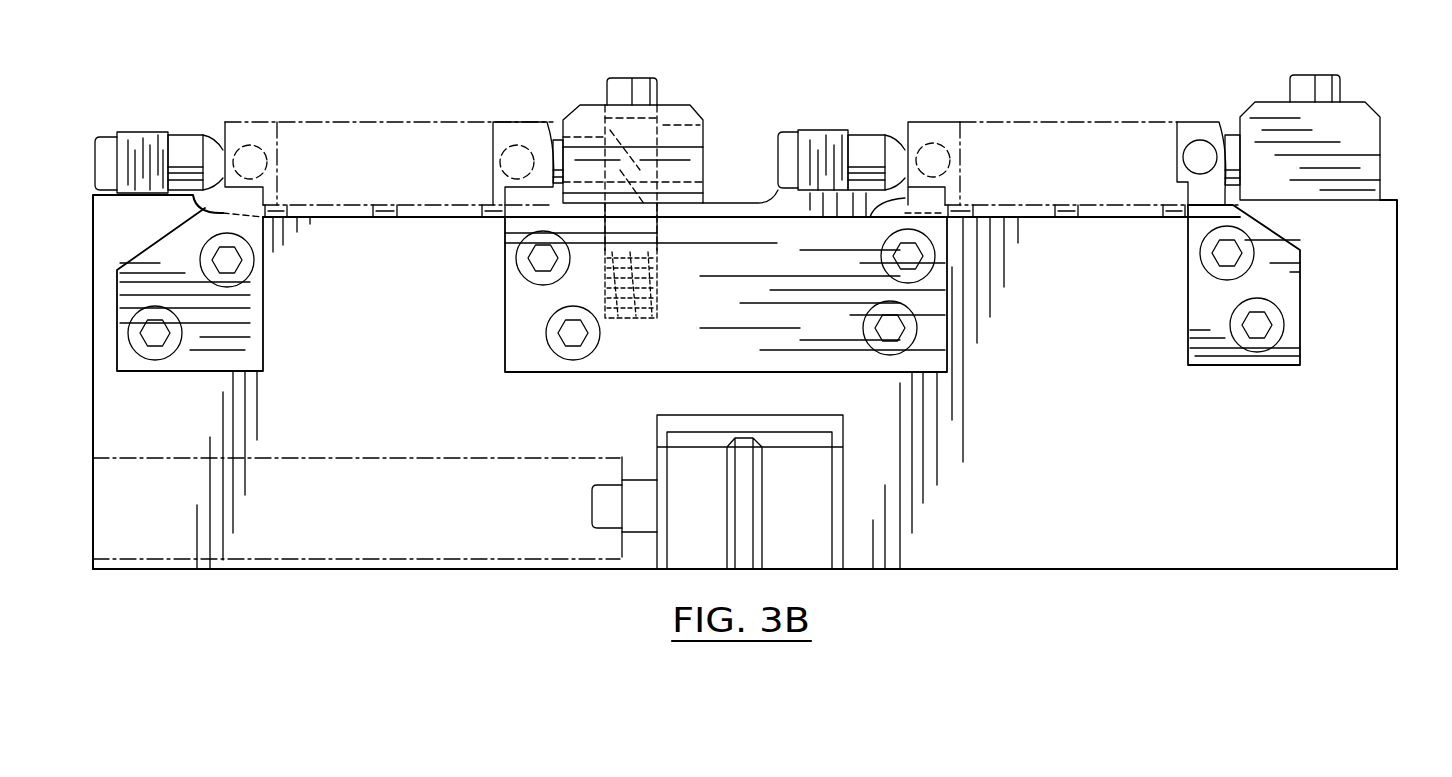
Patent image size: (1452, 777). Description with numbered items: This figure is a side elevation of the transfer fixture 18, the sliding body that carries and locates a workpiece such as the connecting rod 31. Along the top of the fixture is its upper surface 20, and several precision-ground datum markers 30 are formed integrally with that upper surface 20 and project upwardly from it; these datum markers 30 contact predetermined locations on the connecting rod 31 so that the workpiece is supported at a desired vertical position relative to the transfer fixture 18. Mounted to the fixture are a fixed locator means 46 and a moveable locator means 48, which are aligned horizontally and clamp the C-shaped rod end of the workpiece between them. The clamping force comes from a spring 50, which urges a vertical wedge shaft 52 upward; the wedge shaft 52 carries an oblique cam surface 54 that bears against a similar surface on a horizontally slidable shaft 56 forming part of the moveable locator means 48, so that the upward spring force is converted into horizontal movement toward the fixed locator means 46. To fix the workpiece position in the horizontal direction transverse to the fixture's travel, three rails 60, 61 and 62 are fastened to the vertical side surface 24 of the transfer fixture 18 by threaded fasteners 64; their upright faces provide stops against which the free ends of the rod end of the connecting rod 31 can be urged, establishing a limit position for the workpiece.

The transfer fixture 18 is at (1382, 440).
The upper surface 20 is at (446, 216).
The vertical side surface 24 is at (1168, 542).
The datum markers 30 is at (377, 200).
The connecting rod 31 is at (410, 120).
The fixed locator means 46 is at (197, 114).
The moveable locator means 48 is at (723, 118).
The spring 50 is at (660, 286).
The vertical wedge shaft 52 is at (657, 90).
The oblique cam surface 54 is at (605, 130).
The horizontally slidable shaft 56 is at (555, 140).
The rail 60 is at (247, 355).
The rail 61 is at (513, 318).
The rail 62 is at (1195, 327).
The threaded fasteners 64 is at (177, 344).